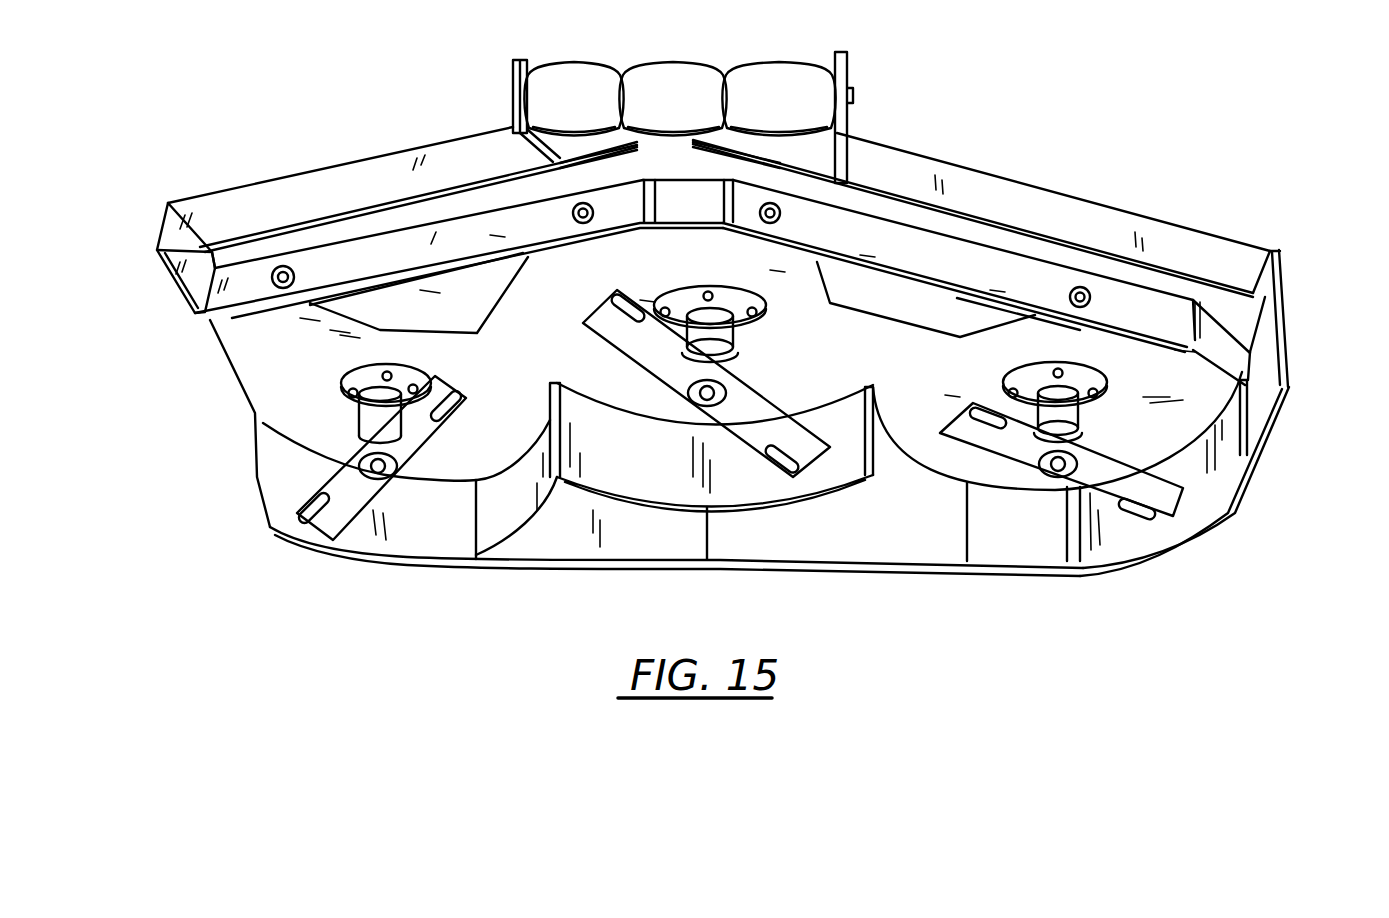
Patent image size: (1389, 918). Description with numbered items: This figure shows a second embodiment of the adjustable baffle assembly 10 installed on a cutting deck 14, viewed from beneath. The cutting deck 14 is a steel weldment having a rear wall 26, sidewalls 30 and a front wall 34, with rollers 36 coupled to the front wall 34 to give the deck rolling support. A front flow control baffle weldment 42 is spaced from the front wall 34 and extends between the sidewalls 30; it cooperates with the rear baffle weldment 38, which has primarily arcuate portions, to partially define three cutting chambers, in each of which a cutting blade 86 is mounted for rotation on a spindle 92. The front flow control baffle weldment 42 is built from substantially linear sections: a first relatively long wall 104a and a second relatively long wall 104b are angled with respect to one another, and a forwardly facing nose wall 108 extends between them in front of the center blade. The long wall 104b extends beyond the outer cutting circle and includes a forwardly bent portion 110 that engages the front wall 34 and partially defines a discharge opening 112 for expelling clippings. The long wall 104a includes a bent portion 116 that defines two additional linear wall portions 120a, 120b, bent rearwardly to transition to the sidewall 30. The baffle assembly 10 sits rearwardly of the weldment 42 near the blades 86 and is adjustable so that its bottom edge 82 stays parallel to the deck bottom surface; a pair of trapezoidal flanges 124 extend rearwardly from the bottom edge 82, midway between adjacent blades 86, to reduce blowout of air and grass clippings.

The rollers 36 is at (740, 75).
The front wall 34 is at (893, 163).
The second relatively long wall 104b is at (430, 257).
The first relatively long wall 104a is at (943, 243).
The front flow control baffle weldment 42 is at (1157, 310).
The forwardly bent portion 110 is at (193, 288).
The baffle assembly 10 is at (572, 240).
The bottom edge 82 is at (785, 245).
The nose wall 108 is at (700, 215).
The additional generally linear wall portion 120a is at (1217, 340).
The bent portion 116 is at (1260, 373).
The additional generally linear wall portion 120b is at (1255, 414).
The sidewall 30 is at (1260, 458).
The cutting deck 14 is at (1253, 507).
The rear wall 26 is at (750, 537).
The rear baffle weldment 38 is at (630, 490).
The discharge opening 112 is at (233, 410).
The trapezoidal flanges 124 is at (440, 298).
The spindle 92 is at (359, 417).
The cutting blade 86 is at (350, 498).